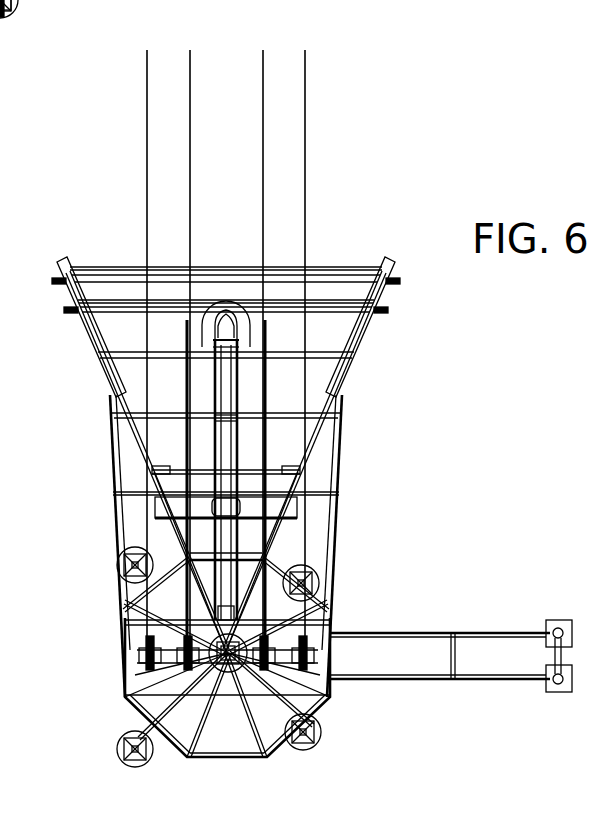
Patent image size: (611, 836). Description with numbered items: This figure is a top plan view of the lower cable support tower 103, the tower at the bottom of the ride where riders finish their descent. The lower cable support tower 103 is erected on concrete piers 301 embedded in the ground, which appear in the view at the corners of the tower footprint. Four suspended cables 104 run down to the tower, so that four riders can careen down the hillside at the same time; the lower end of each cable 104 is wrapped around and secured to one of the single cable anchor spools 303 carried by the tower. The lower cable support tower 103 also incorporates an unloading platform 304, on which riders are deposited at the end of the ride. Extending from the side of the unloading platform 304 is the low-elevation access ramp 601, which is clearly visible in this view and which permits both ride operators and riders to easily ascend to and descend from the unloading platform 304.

The lower cable support tower 103 is at (360, 768).
The cable 104 is at (185, 128).
The concrete piers 301 is at (118, 563).
The single cable anchor spools 303 is at (133, 640).
The unloading platform 304 is at (226, 750).
The low-elevation access ramp 601 is at (437, 655).